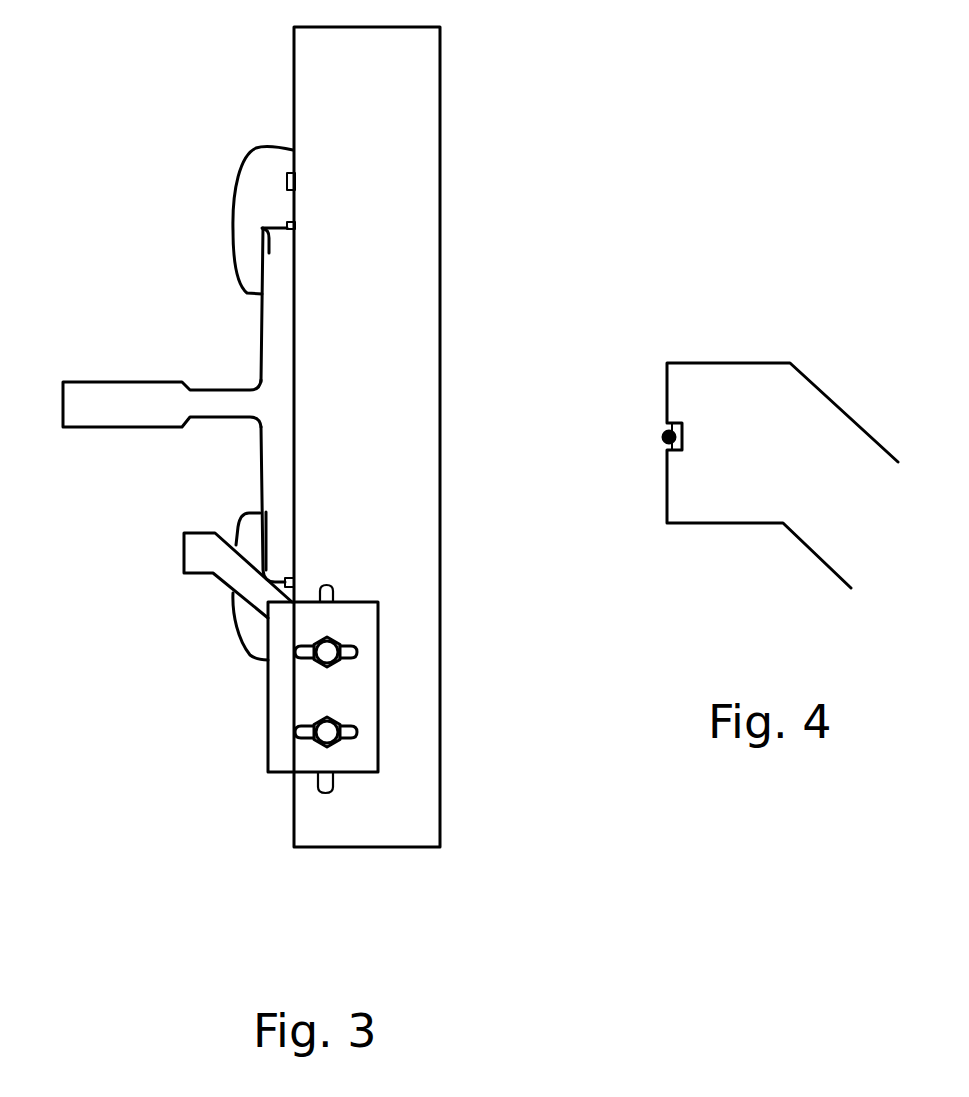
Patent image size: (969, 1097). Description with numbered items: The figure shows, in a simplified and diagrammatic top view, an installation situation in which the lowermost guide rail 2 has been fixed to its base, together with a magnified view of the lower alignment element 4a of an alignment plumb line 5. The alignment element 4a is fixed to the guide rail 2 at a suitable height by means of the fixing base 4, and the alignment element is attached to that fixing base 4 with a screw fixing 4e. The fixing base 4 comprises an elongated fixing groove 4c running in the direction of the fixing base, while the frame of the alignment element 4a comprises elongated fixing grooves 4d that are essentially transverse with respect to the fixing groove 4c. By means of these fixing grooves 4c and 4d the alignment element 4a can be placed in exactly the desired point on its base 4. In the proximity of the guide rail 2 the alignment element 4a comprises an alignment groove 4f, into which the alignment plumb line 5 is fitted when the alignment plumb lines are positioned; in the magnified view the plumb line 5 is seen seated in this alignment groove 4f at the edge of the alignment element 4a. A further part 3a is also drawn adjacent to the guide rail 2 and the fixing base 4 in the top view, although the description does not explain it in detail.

In FIG. 3, the guide rail 2 is at (92, 398).
In FIG. 3, the clip lug 3a is at (247, 178).
In FIG. 3, the fixing base 4 is at (425, 81).
In FIG. 3, the lower alignment element 4a is at (272, 752).
In FIG. 4, the lower alignment element 4a is at (743, 368).
In FIG. 3, the fixing groove 4c is at (325, 585).
In FIG. 3, the fixing grooves 4d is at (362, 653).
In FIG. 3, the screw fixing 4e is at (332, 738).
In FIG. 4, the alignment groove 4f is at (667, 447).
In FIG. 3, the alignment plumb line 5 is at (187, 551).
In FIG. 4, the alignment plumb line 5 is at (662, 437).